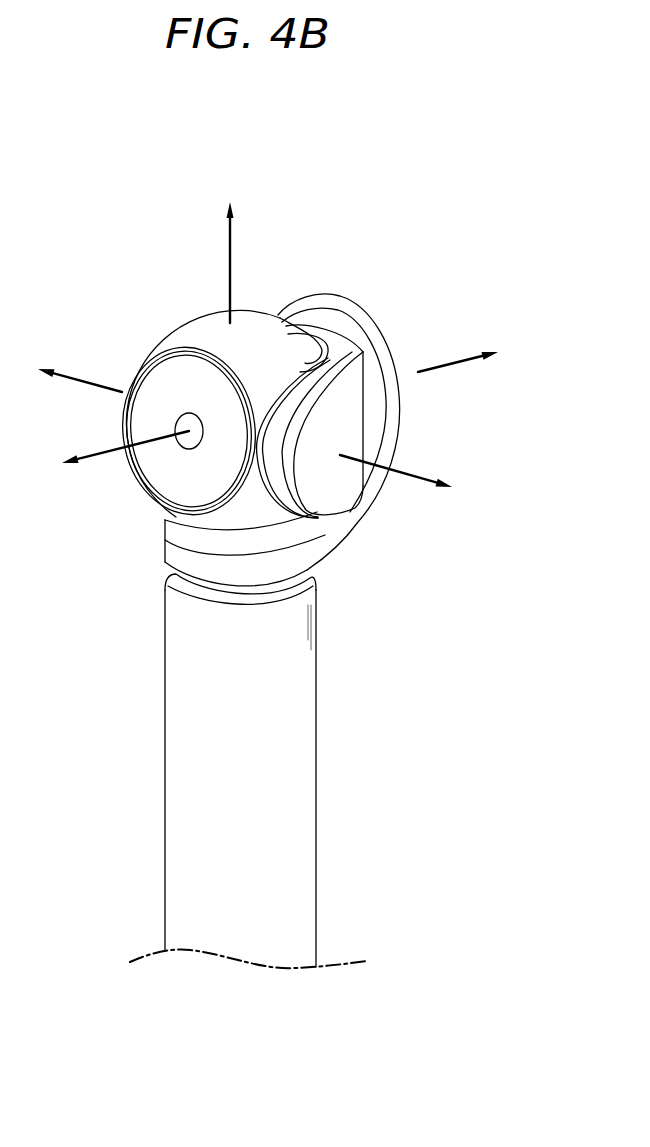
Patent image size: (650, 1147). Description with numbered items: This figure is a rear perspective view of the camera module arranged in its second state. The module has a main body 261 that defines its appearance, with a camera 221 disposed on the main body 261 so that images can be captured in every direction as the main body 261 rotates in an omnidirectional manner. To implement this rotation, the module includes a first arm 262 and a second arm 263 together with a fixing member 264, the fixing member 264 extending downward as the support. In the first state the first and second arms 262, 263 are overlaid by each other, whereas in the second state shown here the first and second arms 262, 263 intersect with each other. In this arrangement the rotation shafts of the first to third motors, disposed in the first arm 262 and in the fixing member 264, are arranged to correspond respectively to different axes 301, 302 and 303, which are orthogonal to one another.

The camera 221 is at (190, 441).
The main body 261 is at (188, 335).
The first arm 262 is at (328, 484).
The second arm 263 is at (400, 404).
The fixing member 264 is at (175, 703).
The axis 301 is at (425, 476).
The axis 302 is at (472, 353).
The axis 303 is at (232, 244).